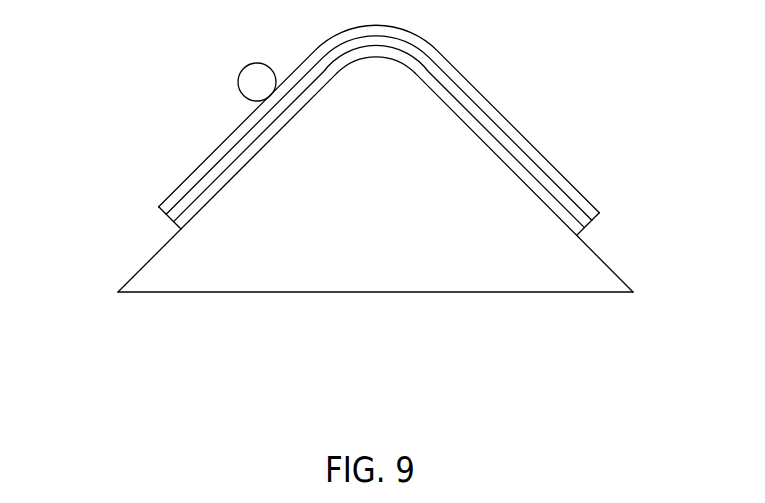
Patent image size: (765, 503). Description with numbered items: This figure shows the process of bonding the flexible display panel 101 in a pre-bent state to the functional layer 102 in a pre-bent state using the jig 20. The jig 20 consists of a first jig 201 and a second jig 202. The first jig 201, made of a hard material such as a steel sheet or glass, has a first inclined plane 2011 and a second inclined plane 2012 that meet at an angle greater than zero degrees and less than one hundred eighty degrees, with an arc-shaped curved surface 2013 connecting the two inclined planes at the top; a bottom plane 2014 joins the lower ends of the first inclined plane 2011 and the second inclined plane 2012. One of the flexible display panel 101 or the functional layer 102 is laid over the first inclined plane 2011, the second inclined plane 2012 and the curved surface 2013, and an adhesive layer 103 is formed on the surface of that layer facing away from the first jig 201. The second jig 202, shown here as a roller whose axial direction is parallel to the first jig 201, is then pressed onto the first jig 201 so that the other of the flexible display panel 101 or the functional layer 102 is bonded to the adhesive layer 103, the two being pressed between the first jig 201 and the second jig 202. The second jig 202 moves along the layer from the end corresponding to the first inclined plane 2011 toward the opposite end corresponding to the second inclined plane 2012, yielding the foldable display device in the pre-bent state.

The jig 20 is at (366, 206).
The first jig 201 is at (366, 222).
The first inclined plane 2011 is at (598, 253).
The second inclined plane 2012 is at (155, 255).
The curved surface 2013 is at (375, 58).
The bottom plane 2014 is at (380, 292).
The second jig 202 is at (255, 77).
The flexible display panel 101 is at (525, 177).
The functional layer 102 is at (520, 138).
The adhesive layer 103 is at (523, 158).